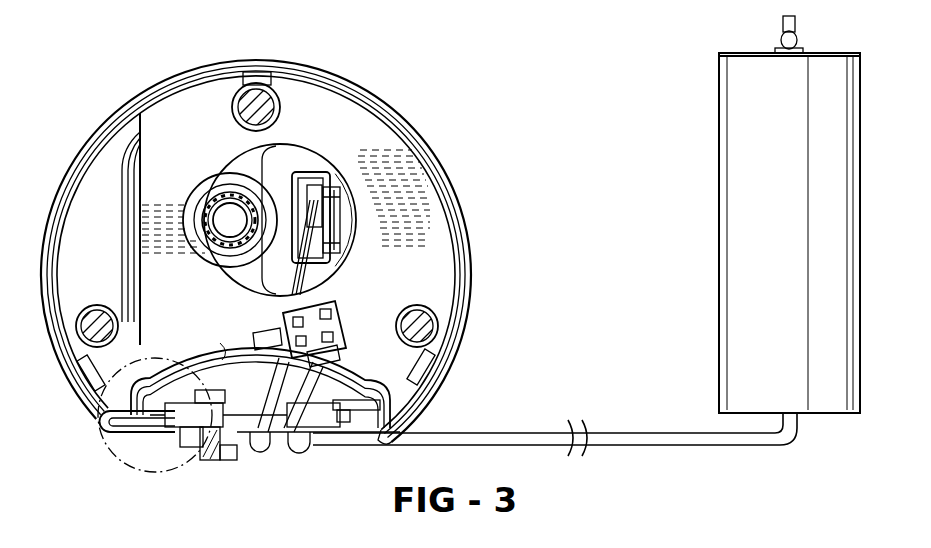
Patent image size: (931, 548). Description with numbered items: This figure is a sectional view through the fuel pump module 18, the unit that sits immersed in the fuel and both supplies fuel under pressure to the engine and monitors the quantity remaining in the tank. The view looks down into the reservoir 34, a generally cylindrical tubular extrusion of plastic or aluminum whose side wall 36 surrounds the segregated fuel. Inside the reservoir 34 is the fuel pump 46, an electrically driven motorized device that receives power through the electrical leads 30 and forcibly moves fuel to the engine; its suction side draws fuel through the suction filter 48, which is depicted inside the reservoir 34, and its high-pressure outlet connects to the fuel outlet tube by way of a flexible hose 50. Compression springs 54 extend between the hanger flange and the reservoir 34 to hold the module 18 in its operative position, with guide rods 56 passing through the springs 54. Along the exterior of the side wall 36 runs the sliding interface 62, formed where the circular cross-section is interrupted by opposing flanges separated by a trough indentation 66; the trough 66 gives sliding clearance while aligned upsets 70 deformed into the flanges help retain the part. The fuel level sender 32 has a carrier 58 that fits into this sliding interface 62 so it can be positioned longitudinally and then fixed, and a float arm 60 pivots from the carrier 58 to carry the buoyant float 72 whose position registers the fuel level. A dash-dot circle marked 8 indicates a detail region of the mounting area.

The detail circle (FIG. 8 section) 8 is at (100, 434).
The fuel pump module 18 is at (518, 98).
The electrical leads 30 is at (283, 316).
The fuel level sender 32 is at (295, 460).
The reservoir 34 is at (463, 178).
The side wall 36 is at (62, 205).
The fuel pump 46 is at (305, 138).
The suction filter 48 is at (122, 188).
The flexible hose 50 is at (222, 197).
The compression springs 54 is at (226, 96).
The guide rods 56 is at (275, 105).
The carrier 58 is at (327, 385).
The float arm 60 is at (518, 432).
The sliding interface 62 is at (153, 434).
The trough indentation 66 is at (214, 375).
The upsets 70 is at (178, 400).
The float 72 is at (718, 128).